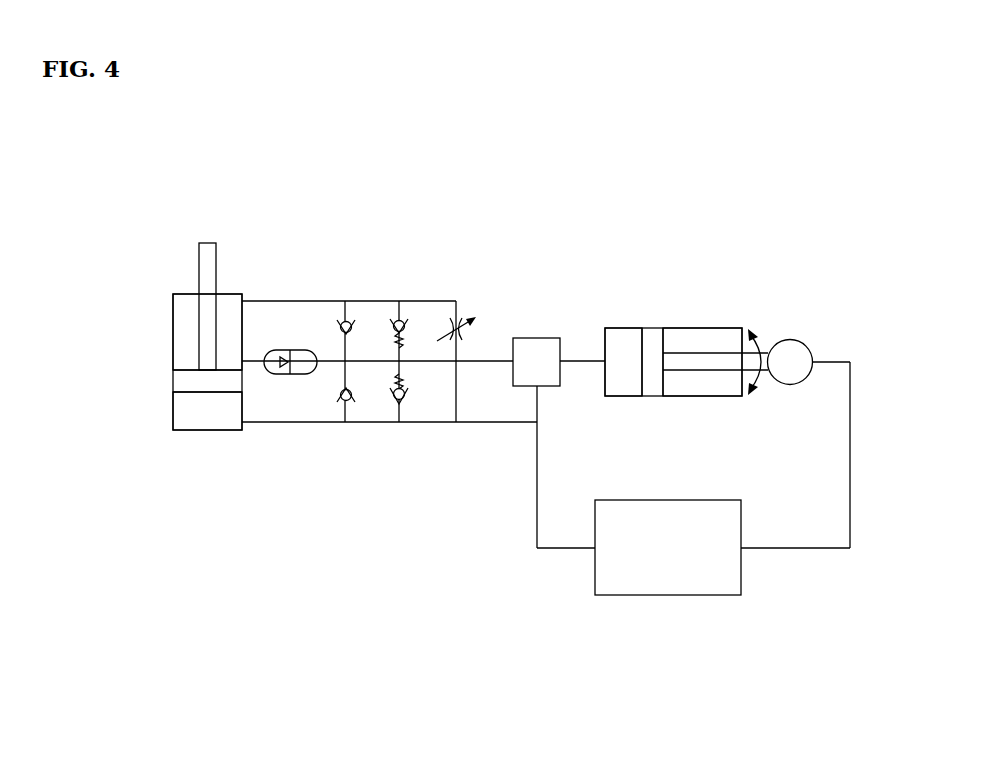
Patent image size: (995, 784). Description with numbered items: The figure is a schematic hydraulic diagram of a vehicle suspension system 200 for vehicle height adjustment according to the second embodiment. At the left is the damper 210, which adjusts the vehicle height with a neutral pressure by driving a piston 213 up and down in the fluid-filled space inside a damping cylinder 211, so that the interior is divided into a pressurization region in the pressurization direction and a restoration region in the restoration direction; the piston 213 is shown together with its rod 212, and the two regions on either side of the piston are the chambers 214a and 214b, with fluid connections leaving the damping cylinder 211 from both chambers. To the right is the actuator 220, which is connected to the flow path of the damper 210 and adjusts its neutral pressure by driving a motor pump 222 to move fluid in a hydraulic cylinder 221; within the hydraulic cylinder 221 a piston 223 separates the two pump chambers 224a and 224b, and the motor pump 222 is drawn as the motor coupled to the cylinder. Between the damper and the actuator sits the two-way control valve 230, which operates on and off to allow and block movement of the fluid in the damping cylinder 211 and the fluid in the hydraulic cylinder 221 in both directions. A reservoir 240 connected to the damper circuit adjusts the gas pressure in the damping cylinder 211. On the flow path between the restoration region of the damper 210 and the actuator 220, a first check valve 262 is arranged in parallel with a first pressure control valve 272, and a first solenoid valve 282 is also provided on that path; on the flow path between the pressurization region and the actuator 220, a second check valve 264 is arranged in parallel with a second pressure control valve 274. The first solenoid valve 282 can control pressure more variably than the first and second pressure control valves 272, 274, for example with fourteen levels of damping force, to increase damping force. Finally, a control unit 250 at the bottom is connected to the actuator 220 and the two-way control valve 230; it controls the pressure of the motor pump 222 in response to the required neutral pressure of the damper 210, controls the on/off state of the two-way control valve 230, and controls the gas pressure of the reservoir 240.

The vehicle suspension system 200 is at (779, 157).
The damper 210 is at (180, 236).
The damping cylinder 211 is at (173, 300).
The piston rod 212 is at (208, 267).
The piston 213 is at (187, 380).
The first chamber 214a is at (188, 413).
The second chamber 214b is at (190, 350).
The actuator 220 is at (782, 308).
The hydraulic cylinder 221 is at (697, 327).
The motor pump 222 is at (805, 343).
The pump piston 223 is at (653, 342).
The first pump chamber 224a is at (618, 340).
The second pump chamber 224b is at (718, 338).
The two-way control valve 230 is at (536, 338).
The reservoir 240 is at (282, 374).
The control unit 250 is at (665, 597).
The first check valve 262 is at (338, 328).
The second check valve 264 is at (340, 401).
The first pressure control valve 272 is at (399, 318).
The second pressure control valve 274 is at (400, 406).
The first solenoid valve 282 is at (460, 320).